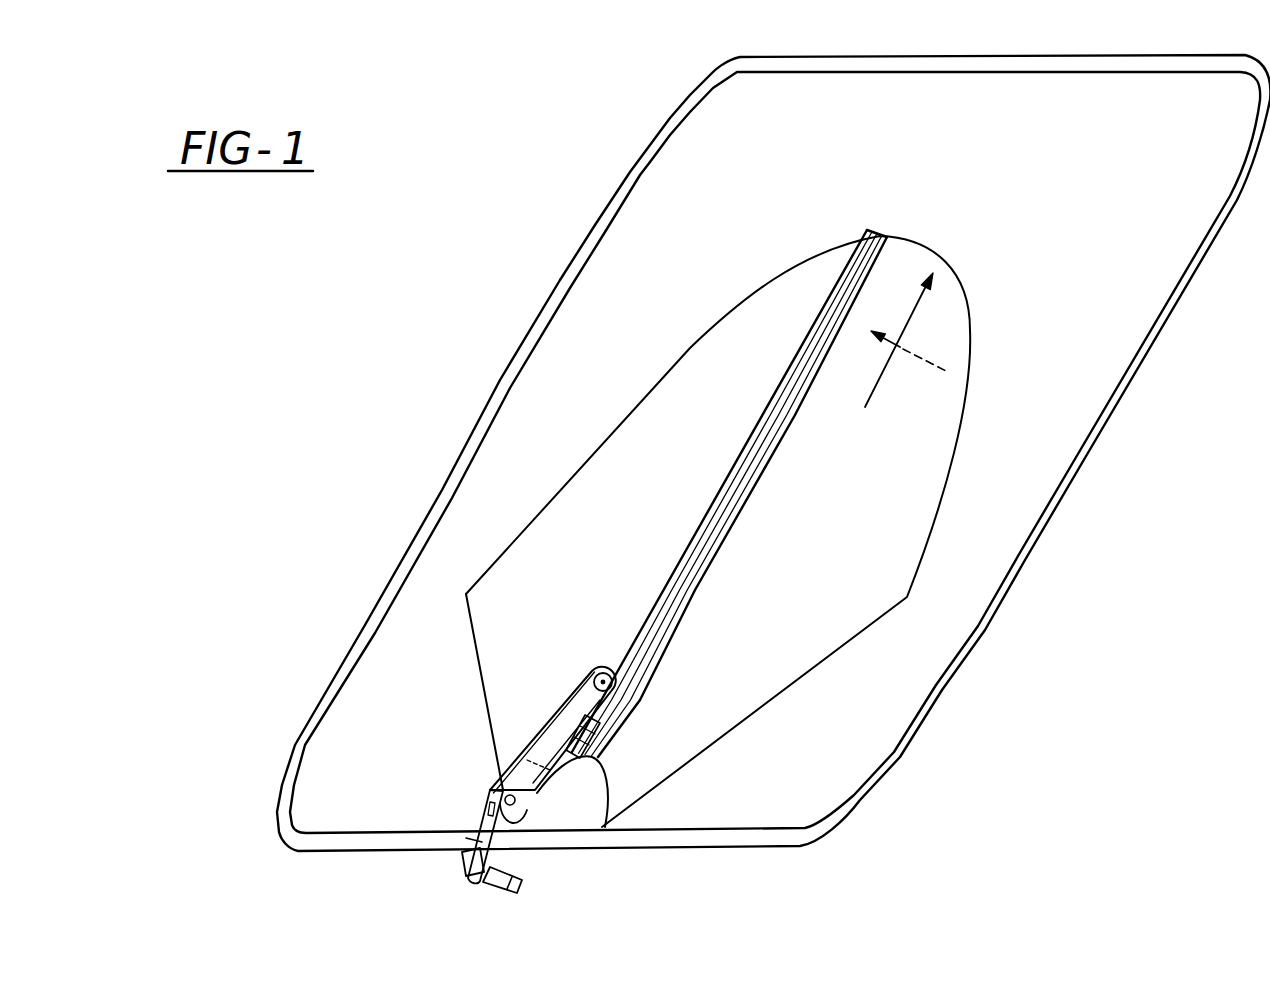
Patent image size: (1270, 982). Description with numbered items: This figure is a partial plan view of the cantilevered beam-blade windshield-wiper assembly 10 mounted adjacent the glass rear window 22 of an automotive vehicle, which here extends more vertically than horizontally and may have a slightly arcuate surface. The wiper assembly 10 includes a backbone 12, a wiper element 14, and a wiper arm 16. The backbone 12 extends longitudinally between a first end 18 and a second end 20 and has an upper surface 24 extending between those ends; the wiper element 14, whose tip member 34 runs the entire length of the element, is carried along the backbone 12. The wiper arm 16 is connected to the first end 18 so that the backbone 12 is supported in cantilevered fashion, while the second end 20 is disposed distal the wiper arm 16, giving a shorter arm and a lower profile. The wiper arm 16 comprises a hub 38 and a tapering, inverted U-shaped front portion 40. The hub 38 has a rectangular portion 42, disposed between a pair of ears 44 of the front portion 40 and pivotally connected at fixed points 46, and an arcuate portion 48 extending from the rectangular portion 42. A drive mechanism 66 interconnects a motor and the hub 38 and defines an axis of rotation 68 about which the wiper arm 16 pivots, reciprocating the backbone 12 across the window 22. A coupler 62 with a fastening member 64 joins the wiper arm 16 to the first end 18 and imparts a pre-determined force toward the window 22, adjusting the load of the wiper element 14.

The cantilevered beam-blade windshield-wiper assembly 10 is at (720, 272).
The backbone 12 is at (729, 470).
The wiper element 14 is at (733, 525).
The wiper arm 16 is at (557, 697).
The first end 18 is at (608, 673).
The second end 20 is at (862, 228).
The glass rear window 22 is at (1010, 527).
The upper surface 24 is at (779, 384).
The tip member 34 is at (782, 438).
The hub 38 is at (462, 850).
The front portion 40 is at (540, 738).
The rectangular portion 42 is at (490, 801).
The ears 44 is at (497, 797).
The fixed points 46 is at (520, 806).
The arcuate portion 48 is at (461, 876).
The coupler 62 is at (592, 746).
The fastening member 64 is at (612, 720).
The drive mechanism 66 is at (520, 870).
The axis of rotation 68 is at (517, 895).